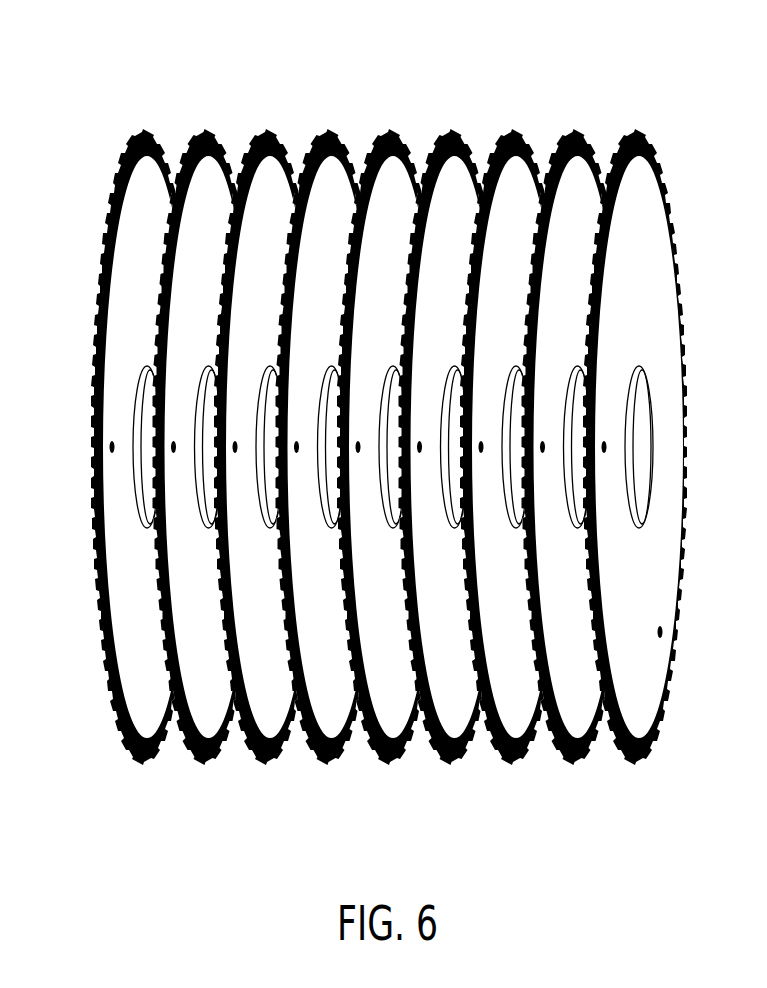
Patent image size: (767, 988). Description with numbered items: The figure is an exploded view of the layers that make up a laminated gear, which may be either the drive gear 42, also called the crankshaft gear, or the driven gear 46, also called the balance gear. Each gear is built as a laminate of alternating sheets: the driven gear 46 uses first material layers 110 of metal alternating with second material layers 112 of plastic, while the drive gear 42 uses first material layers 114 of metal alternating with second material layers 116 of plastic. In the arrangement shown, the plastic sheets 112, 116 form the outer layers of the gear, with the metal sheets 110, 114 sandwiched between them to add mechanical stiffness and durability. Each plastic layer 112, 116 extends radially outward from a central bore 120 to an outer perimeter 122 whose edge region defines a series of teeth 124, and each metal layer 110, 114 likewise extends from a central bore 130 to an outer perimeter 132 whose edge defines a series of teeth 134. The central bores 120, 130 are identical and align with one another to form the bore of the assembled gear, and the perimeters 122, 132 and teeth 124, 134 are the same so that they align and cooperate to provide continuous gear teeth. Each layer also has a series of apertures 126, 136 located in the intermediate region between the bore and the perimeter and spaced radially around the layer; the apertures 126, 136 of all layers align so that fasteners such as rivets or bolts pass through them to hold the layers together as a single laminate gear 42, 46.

The drive gear 42 is at (393, 458).
The driven gear 46 is at (393, 458).
The first material layers 110 is at (393, 458).
The first material layers 114 is at (393, 458).
The second material layers 112 is at (393, 470).
The second material layers 116 is at (393, 470).
The central bore 120 is at (652, 467).
The outer perimeter 122 is at (672, 408).
The series of teeth 124 is at (672, 408).
The apertures 126 is at (662, 633).
The central bore 130 is at (197, 388).
The outer perimeter 132 is at (141, 486).
The series of teeth 134 is at (141, 486).
The apertures 136 is at (173, 448).